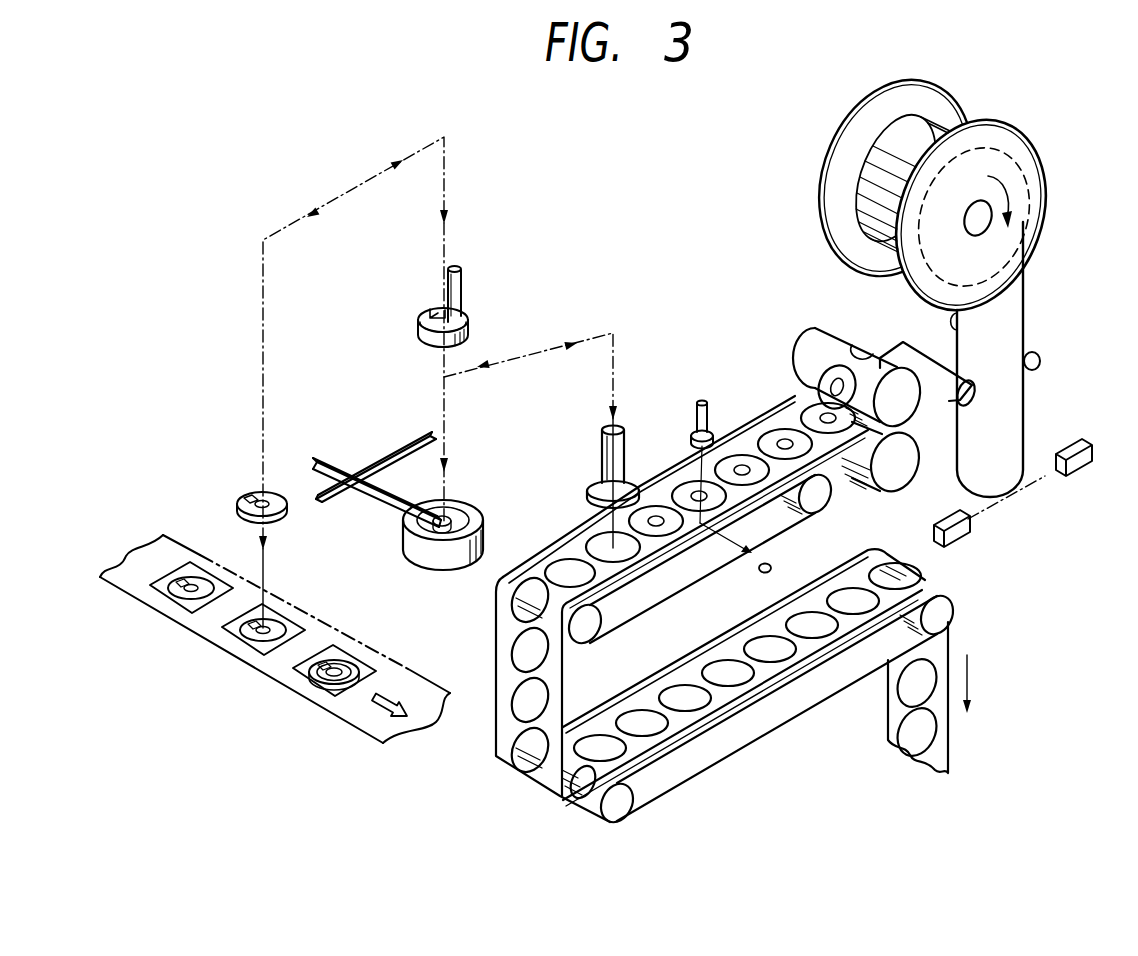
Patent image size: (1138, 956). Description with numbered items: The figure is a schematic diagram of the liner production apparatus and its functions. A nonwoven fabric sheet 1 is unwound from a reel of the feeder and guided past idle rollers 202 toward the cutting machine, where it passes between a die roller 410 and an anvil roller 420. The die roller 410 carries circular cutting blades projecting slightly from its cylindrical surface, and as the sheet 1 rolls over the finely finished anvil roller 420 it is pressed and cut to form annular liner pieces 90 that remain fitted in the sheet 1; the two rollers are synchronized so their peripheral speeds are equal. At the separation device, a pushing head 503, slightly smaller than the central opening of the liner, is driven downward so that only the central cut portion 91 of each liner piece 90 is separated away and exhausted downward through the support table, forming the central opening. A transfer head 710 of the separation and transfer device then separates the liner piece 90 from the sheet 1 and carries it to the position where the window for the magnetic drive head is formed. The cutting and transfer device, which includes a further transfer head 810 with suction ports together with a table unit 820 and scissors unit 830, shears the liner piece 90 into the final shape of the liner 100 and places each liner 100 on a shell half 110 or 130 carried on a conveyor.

The nonwoven fabric sheet 1 is at (1032, 297).
The idle rollers 202 is at (1044, 357).
The die roller 410 is at (815, 338).
The anvil roller 420 is at (900, 482).
The liner piece 90 is at (778, 446).
The central cut portion 91 is at (771, 567).
The pushing head 503 is at (701, 400).
The transfer head 710 is at (626, 452).
The transfer head 810 is at (463, 292).
The rotary disc 820 is at (476, 506).
The guide bars 830 is at (350, 460).
The liner 100 is at (278, 510).
The shell half 110 is at (275, 639).
The shell half 130 is at (183, 608).